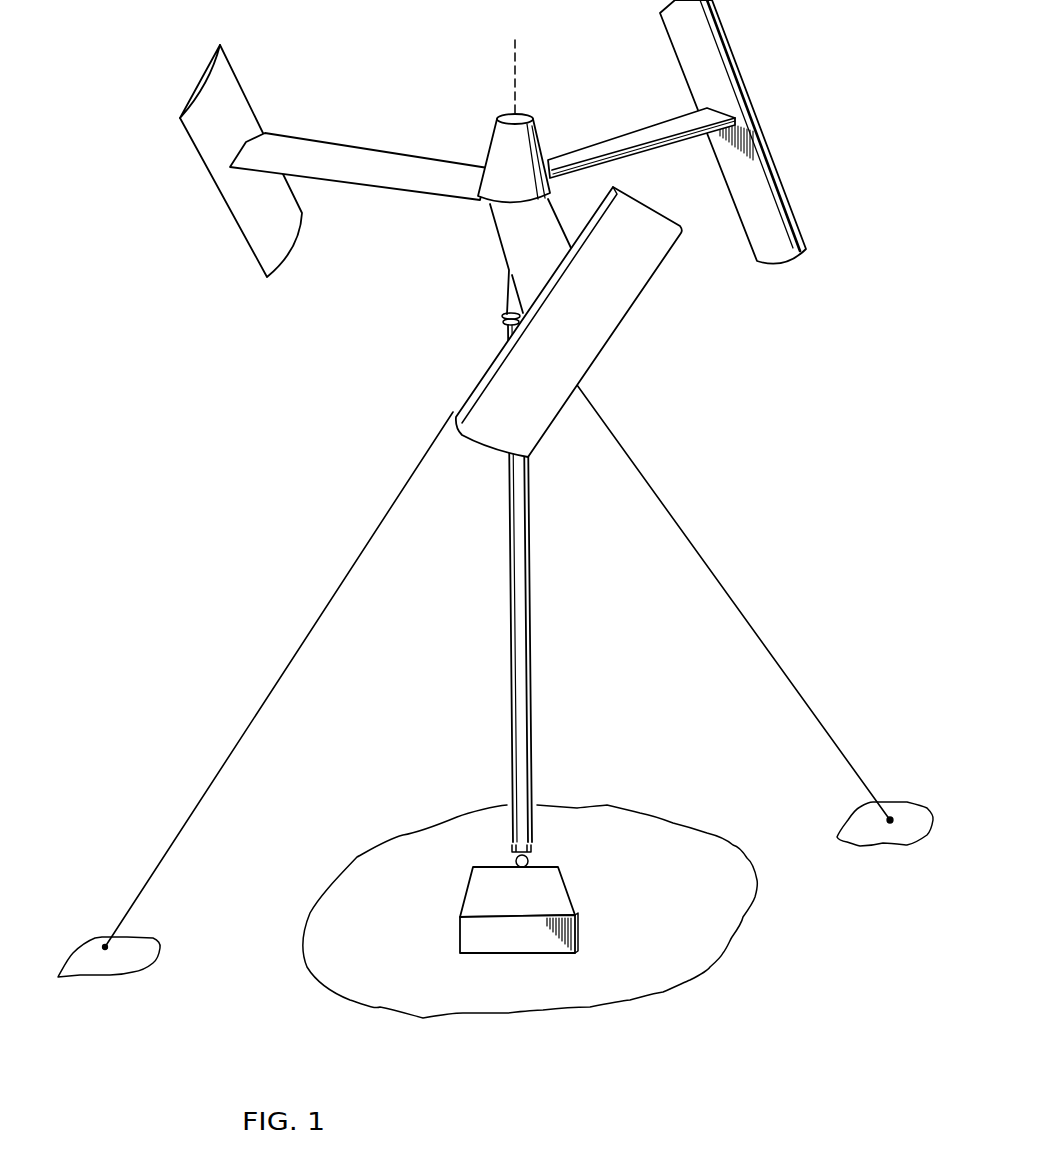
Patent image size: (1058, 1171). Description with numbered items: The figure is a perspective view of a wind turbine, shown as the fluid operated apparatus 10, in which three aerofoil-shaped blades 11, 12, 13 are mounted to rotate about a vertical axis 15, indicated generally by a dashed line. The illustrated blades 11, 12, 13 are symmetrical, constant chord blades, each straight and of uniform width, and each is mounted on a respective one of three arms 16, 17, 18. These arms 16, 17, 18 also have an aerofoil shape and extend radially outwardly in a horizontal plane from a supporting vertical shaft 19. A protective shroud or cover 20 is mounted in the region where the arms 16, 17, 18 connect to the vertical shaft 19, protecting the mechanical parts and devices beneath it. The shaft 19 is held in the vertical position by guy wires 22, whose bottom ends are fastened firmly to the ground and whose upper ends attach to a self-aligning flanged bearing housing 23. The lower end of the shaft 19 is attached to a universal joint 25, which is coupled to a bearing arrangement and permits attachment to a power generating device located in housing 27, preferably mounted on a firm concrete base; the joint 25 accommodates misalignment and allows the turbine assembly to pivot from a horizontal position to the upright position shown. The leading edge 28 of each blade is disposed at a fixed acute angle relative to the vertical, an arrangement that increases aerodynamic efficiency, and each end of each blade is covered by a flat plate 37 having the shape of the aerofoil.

The fluid operated apparatus 10 is at (497, 476).
The aerofoil-shaped blade 11 is at (611, 292).
The aerofoil-shaped blade 12 is at (707, 68).
The aerofoil-shaped blade 13 is at (219, 161).
The vertical axis 15 is at (518, 60).
The arm 16 is at (510, 240).
The arm 17 is at (652, 133).
The arm 18 is at (395, 183).
The vertical shaft 19 is at (530, 570).
The protective shroud 20 is at (537, 130).
The guy wire 22 is at (326, 604).
The self-aligning flanged bearing housing 23 is at (503, 318).
The universal joint 25 is at (537, 858).
The housing 27 is at (563, 898).
The leading edge 28 is at (762, 137).
The flat plate 37 is at (206, 70).